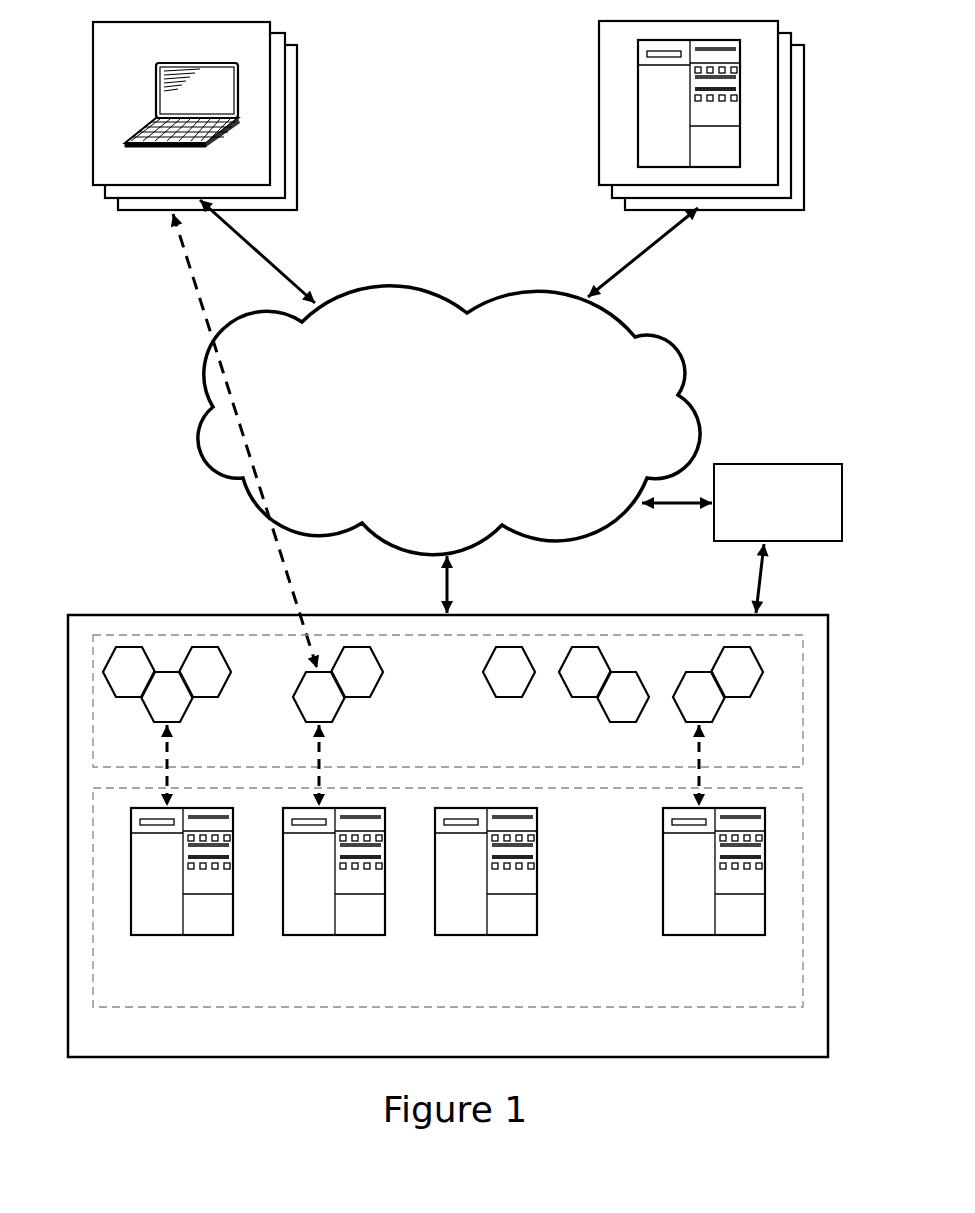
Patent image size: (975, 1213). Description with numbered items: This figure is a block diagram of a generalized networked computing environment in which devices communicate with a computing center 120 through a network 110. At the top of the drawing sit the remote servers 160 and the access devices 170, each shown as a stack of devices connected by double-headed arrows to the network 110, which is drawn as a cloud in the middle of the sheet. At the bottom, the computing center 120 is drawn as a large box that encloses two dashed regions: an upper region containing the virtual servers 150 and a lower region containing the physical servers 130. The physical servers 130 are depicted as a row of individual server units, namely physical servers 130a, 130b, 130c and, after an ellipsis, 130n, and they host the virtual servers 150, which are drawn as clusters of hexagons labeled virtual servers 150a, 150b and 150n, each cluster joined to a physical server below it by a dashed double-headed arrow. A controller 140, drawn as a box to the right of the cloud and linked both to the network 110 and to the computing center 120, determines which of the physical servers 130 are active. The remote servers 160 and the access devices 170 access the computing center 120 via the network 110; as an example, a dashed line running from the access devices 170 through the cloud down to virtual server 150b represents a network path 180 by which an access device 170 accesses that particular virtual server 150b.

The network 110 is at (449, 420).
The computing center 120 is at (448, 836).
The physical servers 130 is at (448, 897).
The physical server 130a is at (182, 883).
The physical server 130b is at (334, 883).
The physical server 130c is at (486, 883).
The physical server 130n is at (714, 883).
The controller 140 is at (778, 502).
The virtual servers 150 is at (448, 701).
The virtual server 150a is at (143, 705).
The virtual server 150b is at (296, 707).
The virtual server 150n is at (722, 707).
The remote servers 160 is at (599, 67).
The access devices 170 is at (297, 159).
The network path 180 is at (197, 297).